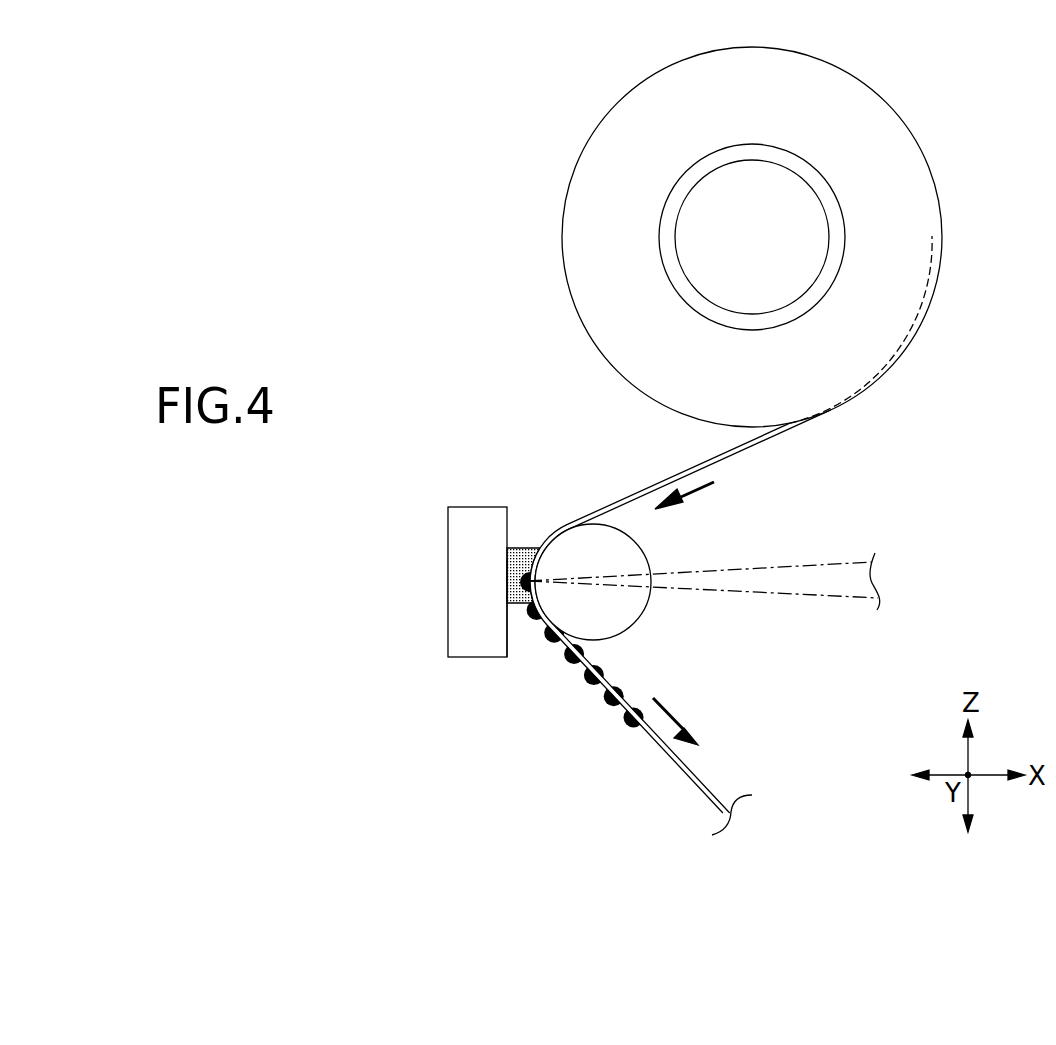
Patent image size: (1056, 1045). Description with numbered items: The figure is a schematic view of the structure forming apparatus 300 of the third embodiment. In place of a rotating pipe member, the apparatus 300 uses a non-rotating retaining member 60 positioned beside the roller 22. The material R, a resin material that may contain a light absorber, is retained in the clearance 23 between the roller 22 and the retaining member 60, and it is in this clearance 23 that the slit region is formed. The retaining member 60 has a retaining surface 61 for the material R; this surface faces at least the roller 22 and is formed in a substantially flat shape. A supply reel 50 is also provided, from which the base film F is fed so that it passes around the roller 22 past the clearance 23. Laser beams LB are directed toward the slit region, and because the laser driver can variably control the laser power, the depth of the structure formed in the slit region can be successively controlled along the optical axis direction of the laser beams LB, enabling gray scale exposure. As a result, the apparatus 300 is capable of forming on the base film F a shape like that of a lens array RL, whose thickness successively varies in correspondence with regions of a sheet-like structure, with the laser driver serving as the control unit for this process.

The structure forming apparatus 300 is at (443, 162).
The supply reel 50 is at (802, 170).
The roller 22 is at (628, 555).
The clearance 23 is at (518, 535).
The retaining member 60 is at (463, 580).
The retaining surface 61 is at (507, 638).
The base film F is at (660, 480).
The material R is at (527, 543).
The lens array RL is at (578, 692).
The laser beams LB is at (767, 595).